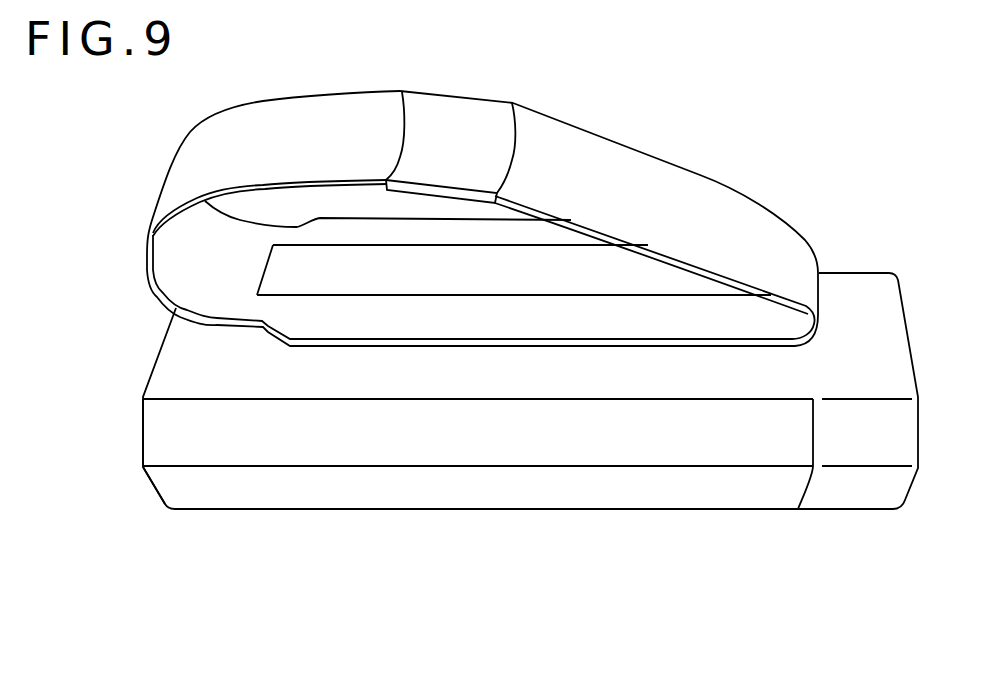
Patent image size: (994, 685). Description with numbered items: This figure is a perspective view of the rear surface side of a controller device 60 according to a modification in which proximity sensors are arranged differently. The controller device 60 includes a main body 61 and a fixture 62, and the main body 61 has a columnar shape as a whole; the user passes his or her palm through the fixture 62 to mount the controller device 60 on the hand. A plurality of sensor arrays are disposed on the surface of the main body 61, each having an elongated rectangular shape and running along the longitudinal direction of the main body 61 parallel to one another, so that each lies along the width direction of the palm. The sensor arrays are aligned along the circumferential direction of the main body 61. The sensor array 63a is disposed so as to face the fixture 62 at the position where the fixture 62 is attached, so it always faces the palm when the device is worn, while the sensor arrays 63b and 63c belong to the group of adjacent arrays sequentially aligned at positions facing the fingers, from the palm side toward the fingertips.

The controller device 60 is at (730, 573).
The main body 61 is at (870, 286).
The fixture 62 is at (697, 182).
The sensor array 63a is at (550, 270).
The sensor array 63b is at (157, 431).
The sensor array 63c is at (167, 493).